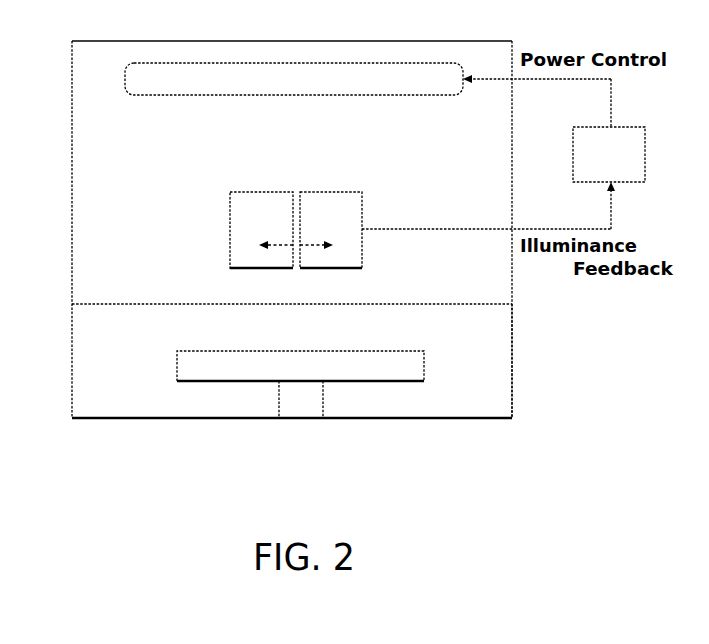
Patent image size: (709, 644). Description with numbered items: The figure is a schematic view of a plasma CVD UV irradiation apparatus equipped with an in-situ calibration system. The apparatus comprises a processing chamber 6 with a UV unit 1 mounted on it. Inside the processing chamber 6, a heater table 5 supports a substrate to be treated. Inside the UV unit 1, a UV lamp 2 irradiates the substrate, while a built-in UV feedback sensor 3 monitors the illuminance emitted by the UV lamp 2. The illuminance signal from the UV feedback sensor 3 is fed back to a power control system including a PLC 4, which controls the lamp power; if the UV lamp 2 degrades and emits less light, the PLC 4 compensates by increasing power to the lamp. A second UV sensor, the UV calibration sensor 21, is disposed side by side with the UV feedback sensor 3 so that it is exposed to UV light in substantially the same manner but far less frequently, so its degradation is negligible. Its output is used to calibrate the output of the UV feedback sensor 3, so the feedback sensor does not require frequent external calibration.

The UV unit 1 is at (303, 38).
The UV lamp 2 is at (143, 97).
The UV feedback sensor 3 is at (281, 221).
The UV calibration sensor 21 is at (230, 235).
The PLC 4 is at (645, 148).
The heater table 5 is at (424, 366).
The processing chamber 6 is at (512, 380).